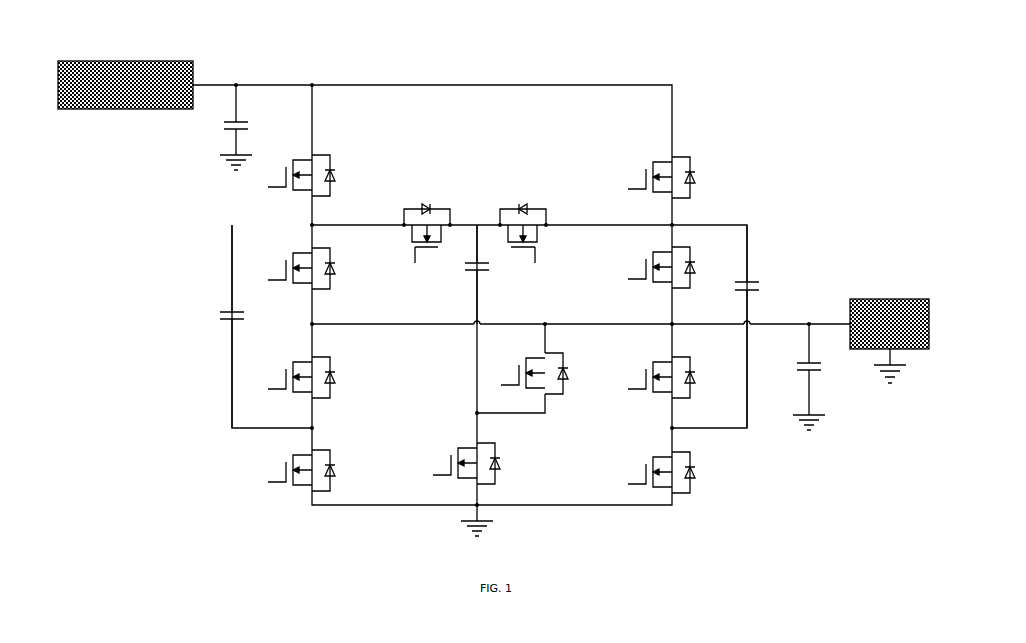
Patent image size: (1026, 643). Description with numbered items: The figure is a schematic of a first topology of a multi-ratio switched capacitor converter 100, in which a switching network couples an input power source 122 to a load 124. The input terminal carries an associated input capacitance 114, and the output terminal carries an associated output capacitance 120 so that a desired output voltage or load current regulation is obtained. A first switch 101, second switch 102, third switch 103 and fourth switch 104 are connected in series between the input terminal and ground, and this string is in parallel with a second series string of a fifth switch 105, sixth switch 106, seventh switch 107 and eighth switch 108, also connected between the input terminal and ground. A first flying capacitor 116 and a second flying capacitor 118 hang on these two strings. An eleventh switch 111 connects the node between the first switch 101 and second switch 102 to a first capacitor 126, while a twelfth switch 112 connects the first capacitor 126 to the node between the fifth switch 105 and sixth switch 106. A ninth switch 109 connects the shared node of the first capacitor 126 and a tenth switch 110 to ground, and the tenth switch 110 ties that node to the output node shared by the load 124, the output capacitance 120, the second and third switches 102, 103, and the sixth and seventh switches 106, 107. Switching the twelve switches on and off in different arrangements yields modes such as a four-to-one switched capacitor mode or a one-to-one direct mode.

The multi-ratio switched capacitor converter 100 is at (72, 45).
The first switch 101 is at (312, 175).
The second switch 102 is at (304, 276).
The third switch 103 is at (312, 377).
The fourth switch 104 is at (312, 466).
The fifth switch 105 is at (671, 177).
The sixth switch 106 is at (672, 265).
The seventh switch 107 is at (669, 374).
The eighth switch 108 is at (667, 466).
The ninth switch 109 is at (471, 463).
The tenth switch 110 is at (541, 372).
The eleventh switch 111 is at (427, 227).
The twelfth switch 112 is at (523, 227).
The input capacitance 114 is at (239, 127).
The first flying capacitor 116 is at (215, 326).
The second flying capacitor 118 is at (746, 326).
The output capacitance 120 is at (803, 377).
The input power source 122 is at (125, 85).
The load 124 is at (889, 341).
The first capacitor 126 is at (481, 274).